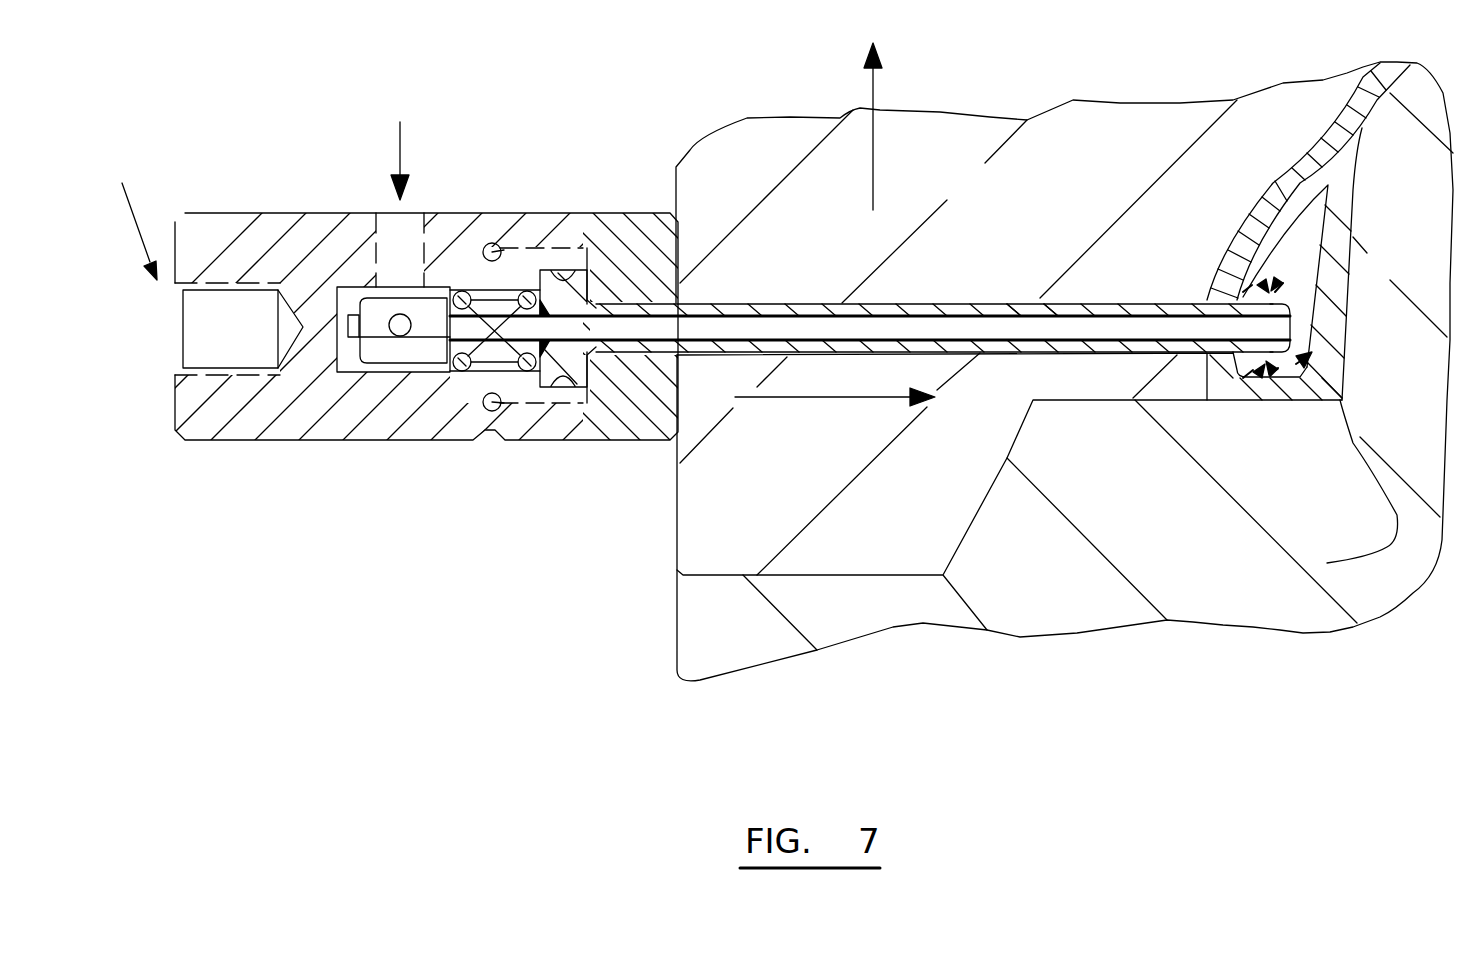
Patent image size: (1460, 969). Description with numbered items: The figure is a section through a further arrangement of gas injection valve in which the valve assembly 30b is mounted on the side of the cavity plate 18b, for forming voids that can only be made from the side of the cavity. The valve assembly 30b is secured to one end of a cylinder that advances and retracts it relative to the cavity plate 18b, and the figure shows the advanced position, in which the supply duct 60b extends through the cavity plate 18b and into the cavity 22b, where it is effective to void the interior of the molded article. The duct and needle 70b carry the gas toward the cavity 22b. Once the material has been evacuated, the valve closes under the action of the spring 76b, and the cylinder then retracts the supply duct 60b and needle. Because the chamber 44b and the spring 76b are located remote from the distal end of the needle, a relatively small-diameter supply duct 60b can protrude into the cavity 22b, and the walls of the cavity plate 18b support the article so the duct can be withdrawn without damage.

The cavity plate 18b is at (1064, 371).
The valve stem 70b is at (793, 330).
The supply duct 60b is at (1027, 297).
The cavity 22b is at (1300, 253).
The spring 76b is at (490, 290).
The chamber 44b is at (350, 347).
The gas injection valve assembly 30b is at (560, 392).